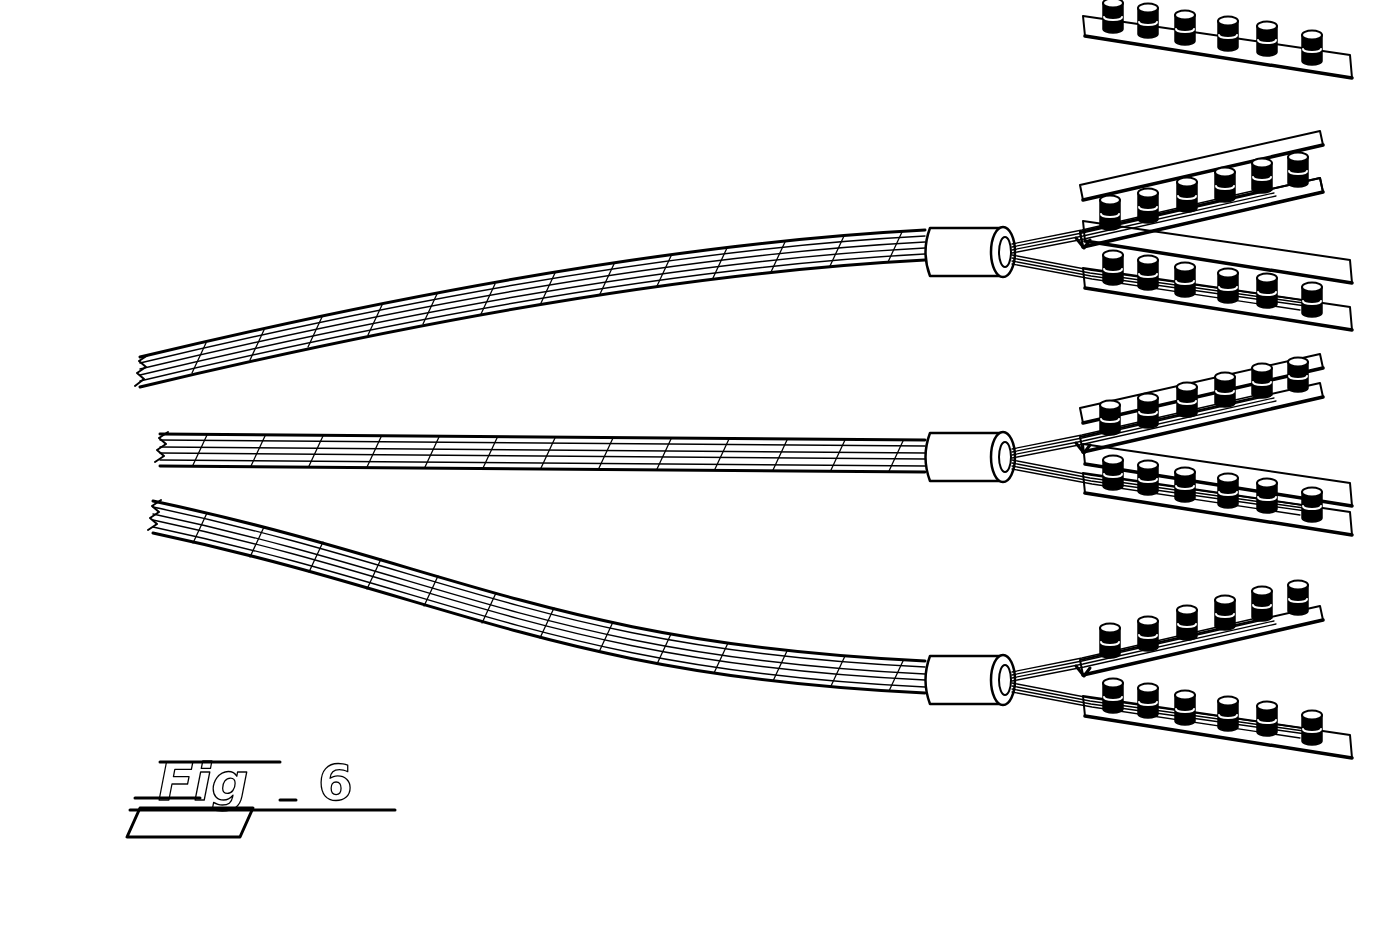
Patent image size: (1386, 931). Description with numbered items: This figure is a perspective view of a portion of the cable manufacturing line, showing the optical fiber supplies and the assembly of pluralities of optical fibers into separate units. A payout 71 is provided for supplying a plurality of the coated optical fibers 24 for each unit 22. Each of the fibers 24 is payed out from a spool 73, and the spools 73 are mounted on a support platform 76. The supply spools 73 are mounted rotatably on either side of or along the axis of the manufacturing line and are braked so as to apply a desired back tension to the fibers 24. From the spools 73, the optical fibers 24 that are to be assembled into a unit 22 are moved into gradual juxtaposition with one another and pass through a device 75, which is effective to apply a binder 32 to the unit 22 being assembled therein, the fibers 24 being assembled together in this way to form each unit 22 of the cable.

The unit 22 is at (312, 334).
The binder 32 is at (562, 277).
The device 75 is at (962, 237).
The coated optical fibers 24 is at (1035, 230).
The spool 73 is at (1140, 193).
The support platform 76 is at (1287, 203).
The payout 71 is at (1258, 135).